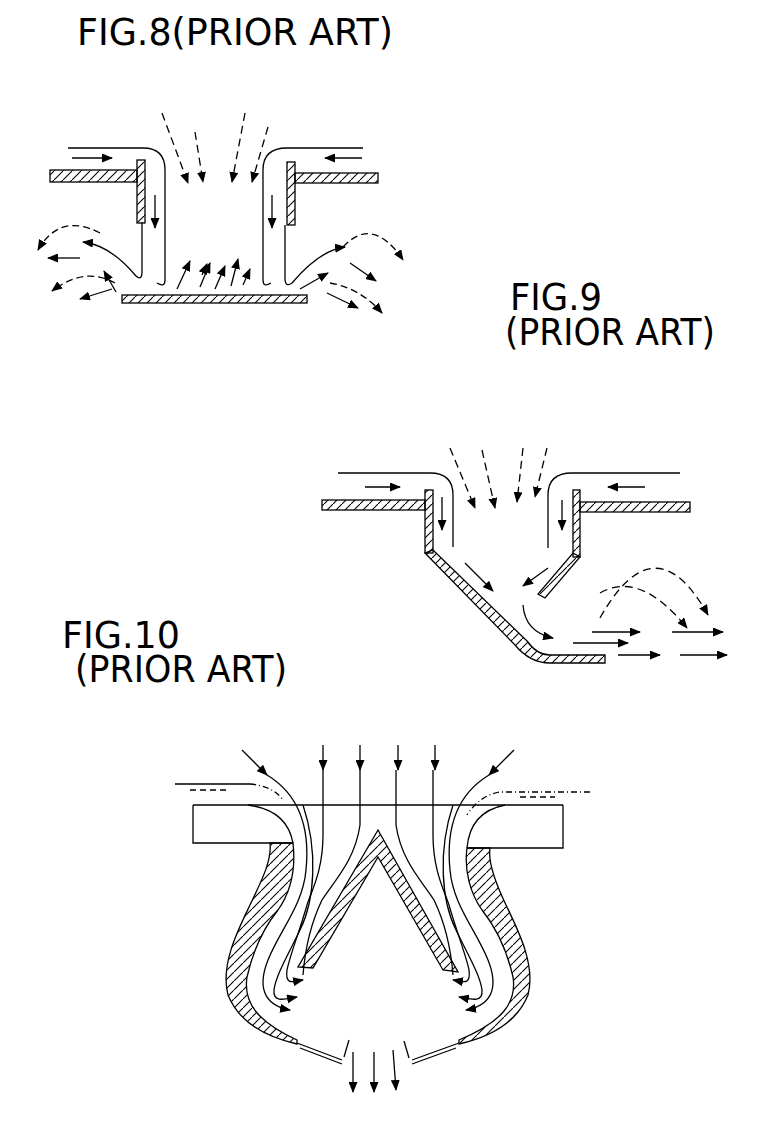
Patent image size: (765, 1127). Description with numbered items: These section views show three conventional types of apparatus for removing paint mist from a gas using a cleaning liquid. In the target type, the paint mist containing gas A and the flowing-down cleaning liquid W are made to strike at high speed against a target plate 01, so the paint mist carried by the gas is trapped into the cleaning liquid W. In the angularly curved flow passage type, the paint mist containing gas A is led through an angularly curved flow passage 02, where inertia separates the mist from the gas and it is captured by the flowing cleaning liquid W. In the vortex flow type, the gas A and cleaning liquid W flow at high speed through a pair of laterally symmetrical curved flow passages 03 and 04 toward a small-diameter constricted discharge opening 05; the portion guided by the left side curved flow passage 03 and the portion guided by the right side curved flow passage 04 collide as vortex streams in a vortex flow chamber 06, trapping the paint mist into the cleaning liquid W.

In FIG. 8, the cleaning liquid W is at (115, 148).
In FIG. 9, the cleaning liquid W is at (392, 472).
In FIG. 10, the cleaning liquid W is at (230, 785).
In FIG. 8, the paint mist containing gas A is at (196, 131).
In FIG. 9, the paint mist containing gas A is at (483, 452).
In FIG. 10, the paint mist containing gas A is at (378, 867).
In FIG. 8, the target plate 01 is at (215, 304).
In FIG. 9, the angularly curved flow passage 02 is at (497, 617).
In FIG. 10, the left side curved flow passage 03 is at (265, 948).
In FIG. 10, the right side curved flow passage 04 is at (503, 965).
In FIG. 10, the constricted discharge opening 05 is at (351, 1061).
In FIG. 10, the vortex flow chamber 06 is at (378, 923).